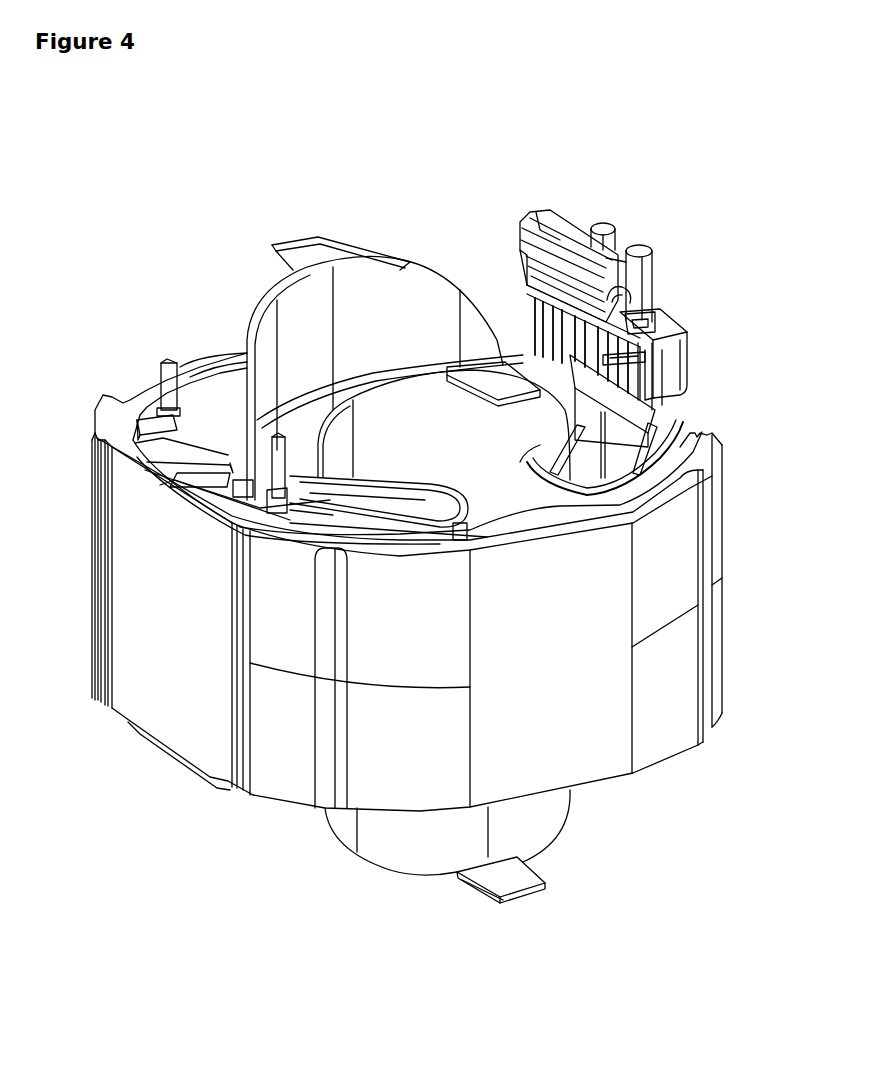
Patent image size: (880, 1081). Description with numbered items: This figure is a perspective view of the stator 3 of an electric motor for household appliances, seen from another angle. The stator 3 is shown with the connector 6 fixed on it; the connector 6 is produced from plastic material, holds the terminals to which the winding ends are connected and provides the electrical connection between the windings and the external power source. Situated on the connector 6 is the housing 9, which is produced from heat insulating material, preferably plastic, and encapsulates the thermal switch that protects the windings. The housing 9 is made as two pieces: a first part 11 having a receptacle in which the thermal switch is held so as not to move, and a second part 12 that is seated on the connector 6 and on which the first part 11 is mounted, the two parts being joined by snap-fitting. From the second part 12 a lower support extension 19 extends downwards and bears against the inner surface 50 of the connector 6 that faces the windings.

The stator 3 is at (567, 660).
The connector 6 is at (528, 307).
The housing 9 is at (591, 185).
The first part 11 is at (523, 247).
The second part 12 is at (665, 325).
The lower support extension 19 is at (645, 268).
The inner surface 50 is at (612, 362).